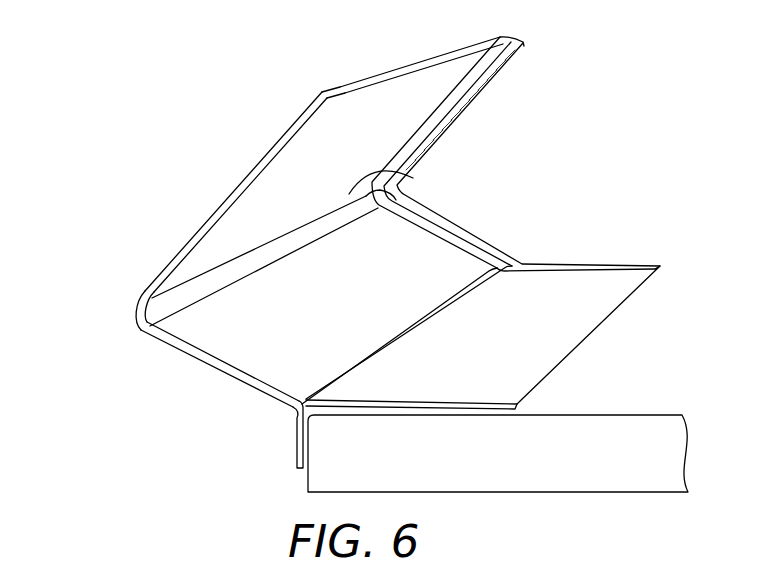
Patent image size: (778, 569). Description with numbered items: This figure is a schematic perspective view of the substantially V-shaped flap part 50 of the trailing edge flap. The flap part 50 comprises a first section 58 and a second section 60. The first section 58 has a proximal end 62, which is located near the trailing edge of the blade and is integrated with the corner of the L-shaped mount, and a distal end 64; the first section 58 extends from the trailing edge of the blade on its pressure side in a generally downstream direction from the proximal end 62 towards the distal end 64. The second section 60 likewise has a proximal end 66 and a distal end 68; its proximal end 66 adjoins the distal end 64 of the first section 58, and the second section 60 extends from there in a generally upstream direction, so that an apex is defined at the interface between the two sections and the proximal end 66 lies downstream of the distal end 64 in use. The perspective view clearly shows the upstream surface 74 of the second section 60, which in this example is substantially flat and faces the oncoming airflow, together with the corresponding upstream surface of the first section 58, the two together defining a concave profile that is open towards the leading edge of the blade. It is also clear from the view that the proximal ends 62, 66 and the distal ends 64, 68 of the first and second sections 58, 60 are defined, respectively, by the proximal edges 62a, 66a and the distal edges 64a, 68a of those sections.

The flap part 50 is at (98, 318).
The first section 58 is at (199, 366).
The second section 60 is at (258, 151).
The proximal end 62 is at (283, 407).
The proximal edge 62a is at (420, 328).
The distal end 64 is at (139, 334).
The distal edge 64a is at (268, 262).
The proximal end 66 is at (137, 297).
The proximal edge 66a is at (410, 177).
The distal end 68 is at (312, 93).
The distal edge 68a is at (415, 62).
The upstream surface 74 is at (473, 101).